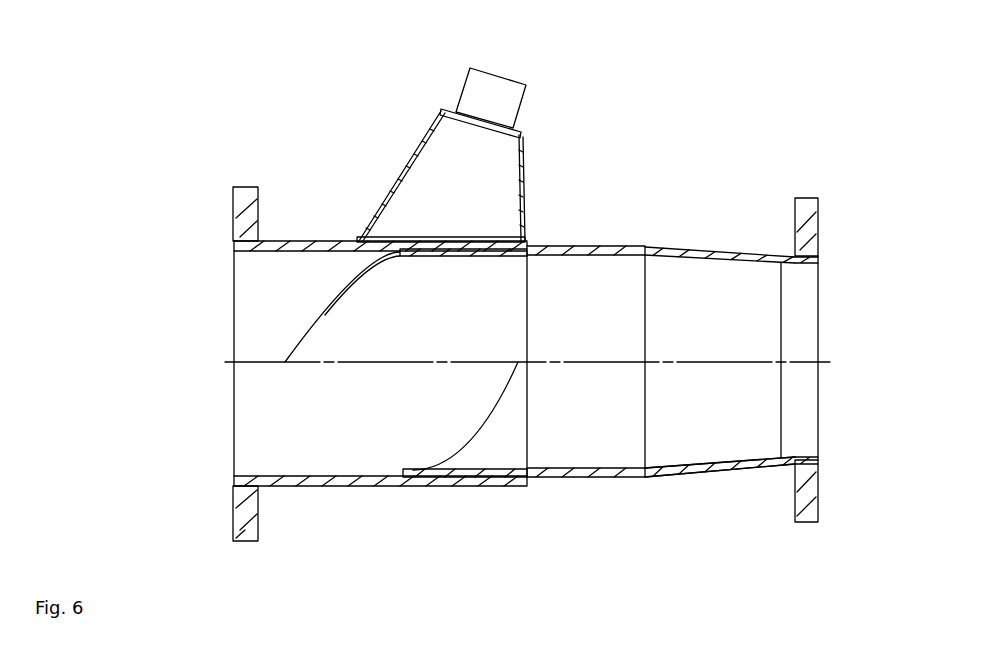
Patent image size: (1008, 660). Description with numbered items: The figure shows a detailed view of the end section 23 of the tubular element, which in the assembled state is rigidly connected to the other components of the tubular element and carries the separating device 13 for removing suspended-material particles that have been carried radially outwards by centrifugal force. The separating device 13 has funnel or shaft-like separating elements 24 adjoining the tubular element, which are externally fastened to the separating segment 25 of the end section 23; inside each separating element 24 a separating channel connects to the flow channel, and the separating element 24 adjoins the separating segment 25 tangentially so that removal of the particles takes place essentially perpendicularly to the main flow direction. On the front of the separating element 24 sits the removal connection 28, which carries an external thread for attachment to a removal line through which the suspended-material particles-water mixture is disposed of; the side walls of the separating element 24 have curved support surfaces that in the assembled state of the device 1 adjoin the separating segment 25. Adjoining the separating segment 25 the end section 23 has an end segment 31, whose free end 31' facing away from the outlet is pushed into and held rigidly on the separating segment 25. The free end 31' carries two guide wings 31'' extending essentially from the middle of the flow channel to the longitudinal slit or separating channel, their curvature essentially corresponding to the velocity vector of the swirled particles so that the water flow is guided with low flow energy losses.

The device 1 is at (798, 330).
The separating device 13 is at (404, 127).
The end section 23 is at (740, 178).
The separating element 24 is at (542, 102).
The separating segment 25 is at (307, 489).
The removal connection 28 is at (488, 90).
The end segment 31 is at (720, 517).
The free end 31' is at (406, 265).
The guide wings 31'' is at (432, 463).